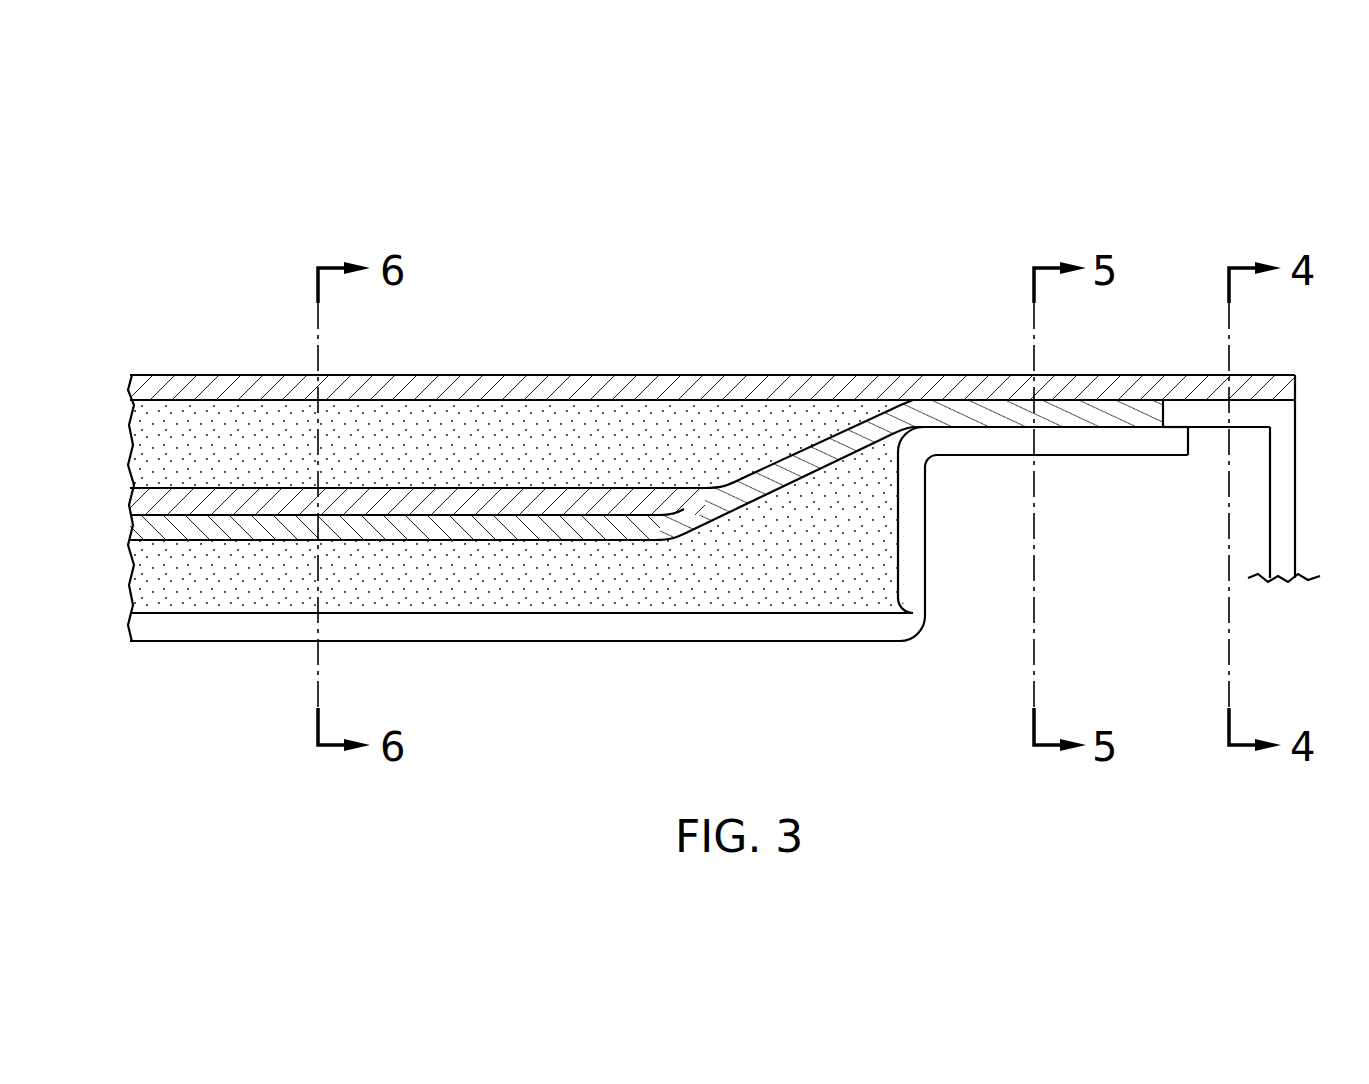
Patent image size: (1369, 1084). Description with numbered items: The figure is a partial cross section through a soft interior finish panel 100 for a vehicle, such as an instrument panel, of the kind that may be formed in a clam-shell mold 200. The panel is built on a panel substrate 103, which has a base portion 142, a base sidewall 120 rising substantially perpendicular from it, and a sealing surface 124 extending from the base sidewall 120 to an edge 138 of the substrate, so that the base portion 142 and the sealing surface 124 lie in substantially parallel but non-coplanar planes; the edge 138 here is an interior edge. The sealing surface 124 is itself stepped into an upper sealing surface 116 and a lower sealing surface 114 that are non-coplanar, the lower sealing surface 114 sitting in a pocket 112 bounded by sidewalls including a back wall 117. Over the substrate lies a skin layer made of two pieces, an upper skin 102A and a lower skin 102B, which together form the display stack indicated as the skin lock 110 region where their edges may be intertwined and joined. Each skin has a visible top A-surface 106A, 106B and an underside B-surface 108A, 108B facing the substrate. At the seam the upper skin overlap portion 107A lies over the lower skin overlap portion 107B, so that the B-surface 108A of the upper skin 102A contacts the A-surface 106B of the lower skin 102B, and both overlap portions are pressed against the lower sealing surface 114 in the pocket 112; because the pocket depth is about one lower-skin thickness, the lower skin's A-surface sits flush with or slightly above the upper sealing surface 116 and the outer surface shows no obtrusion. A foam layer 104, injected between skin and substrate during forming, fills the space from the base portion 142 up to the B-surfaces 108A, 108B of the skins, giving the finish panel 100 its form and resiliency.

The finish panel 100 is at (973, 191).
The mold 200 is at (758, 297).
The upper skin 102A is at (193, 486).
The lower skin 102B is at (514, 613).
The panel substrate 103 is at (515, 692).
The foam layer 104 is at (125, 585).
The A-surface of upper skin 106A is at (556, 375).
The A-surface of lower skin 106B is at (405, 513).
The upper skin overlap portion 107A is at (1004, 375).
The lower skin overlap portion 107B is at (990, 428).
The B-surface of upper skin 108A is at (623, 402).
The B-surface of lower skin 108B is at (455, 540).
The skin lock 110 is at (117, 375).
The pocket 112 is at (1115, 455).
The lower sealing surface 114 is at (1088, 423).
The upper sealing surface 116 is at (1273, 400).
The back wall 117 is at (1157, 418).
The base sidewall 120 is at (927, 559).
The sealing surface 124 is at (898, 342).
The edge 138 is at (1296, 468).
The base portion 142 is at (622, 642).